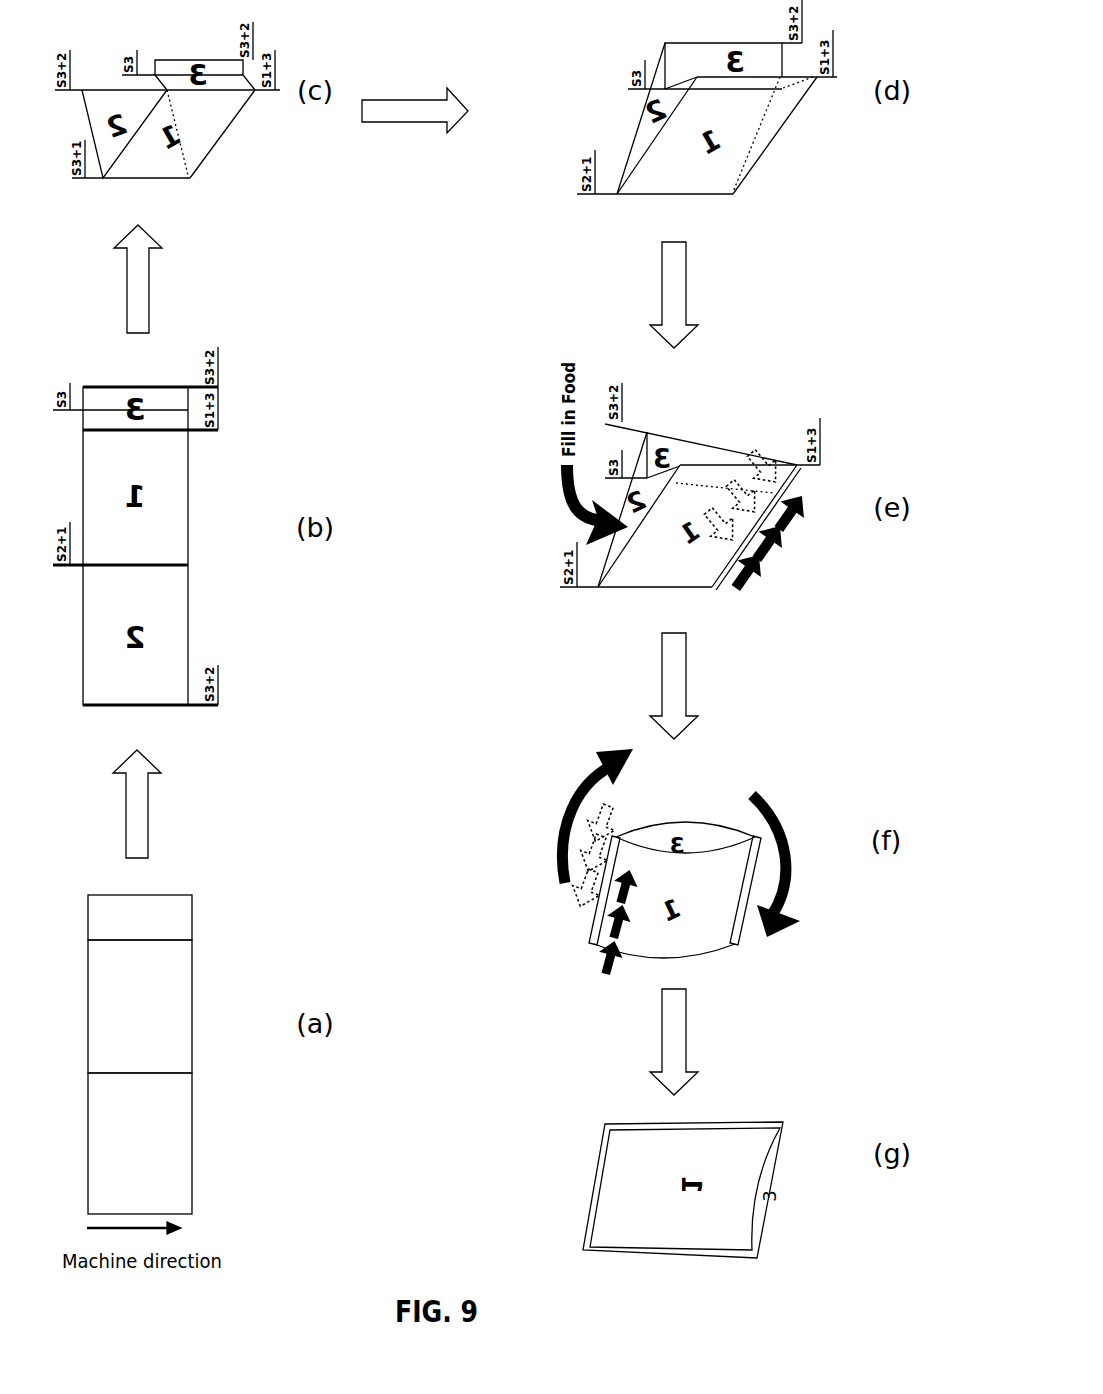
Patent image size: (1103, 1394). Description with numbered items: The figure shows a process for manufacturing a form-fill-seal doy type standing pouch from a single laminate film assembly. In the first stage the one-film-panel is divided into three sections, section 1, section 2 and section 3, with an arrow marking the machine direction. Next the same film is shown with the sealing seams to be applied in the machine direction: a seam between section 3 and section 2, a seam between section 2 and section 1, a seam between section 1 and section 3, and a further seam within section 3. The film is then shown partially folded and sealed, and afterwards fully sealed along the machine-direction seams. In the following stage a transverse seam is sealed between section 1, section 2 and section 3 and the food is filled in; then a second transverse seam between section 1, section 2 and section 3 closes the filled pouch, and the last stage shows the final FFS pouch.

The section 1 is at (140, 1006).
The section 2 is at (140, 1143).
The section 3 is at (140, 920).